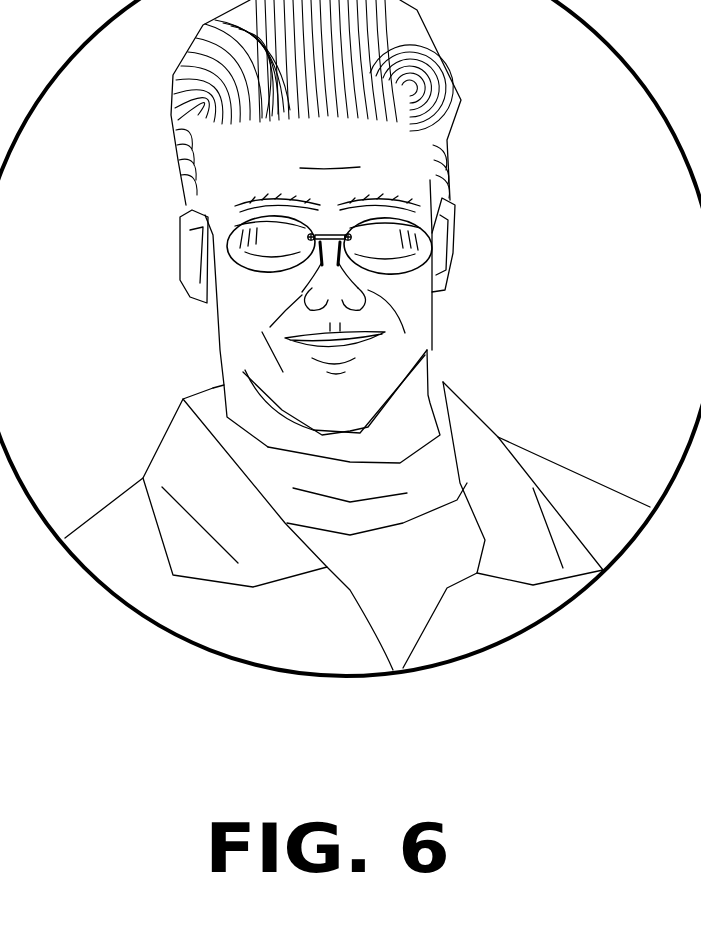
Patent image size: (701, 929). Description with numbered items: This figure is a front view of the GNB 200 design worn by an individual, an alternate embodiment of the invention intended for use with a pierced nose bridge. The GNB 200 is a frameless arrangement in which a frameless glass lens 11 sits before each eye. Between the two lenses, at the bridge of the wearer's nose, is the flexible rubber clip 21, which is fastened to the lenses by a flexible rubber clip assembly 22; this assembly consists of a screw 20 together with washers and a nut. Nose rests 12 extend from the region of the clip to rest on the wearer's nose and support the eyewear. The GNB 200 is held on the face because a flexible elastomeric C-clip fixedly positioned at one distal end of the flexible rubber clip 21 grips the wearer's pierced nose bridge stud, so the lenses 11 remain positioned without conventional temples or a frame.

The GNB design 200 is at (487, 101).
The screw 20 is at (338, 218).
The lens 11 is at (263, 227).
The flexible rubber clip 21 is at (300, 226).
The flexible rubber clip assembly 22 is at (357, 242).
The nose rest 12 is at (325, 248).